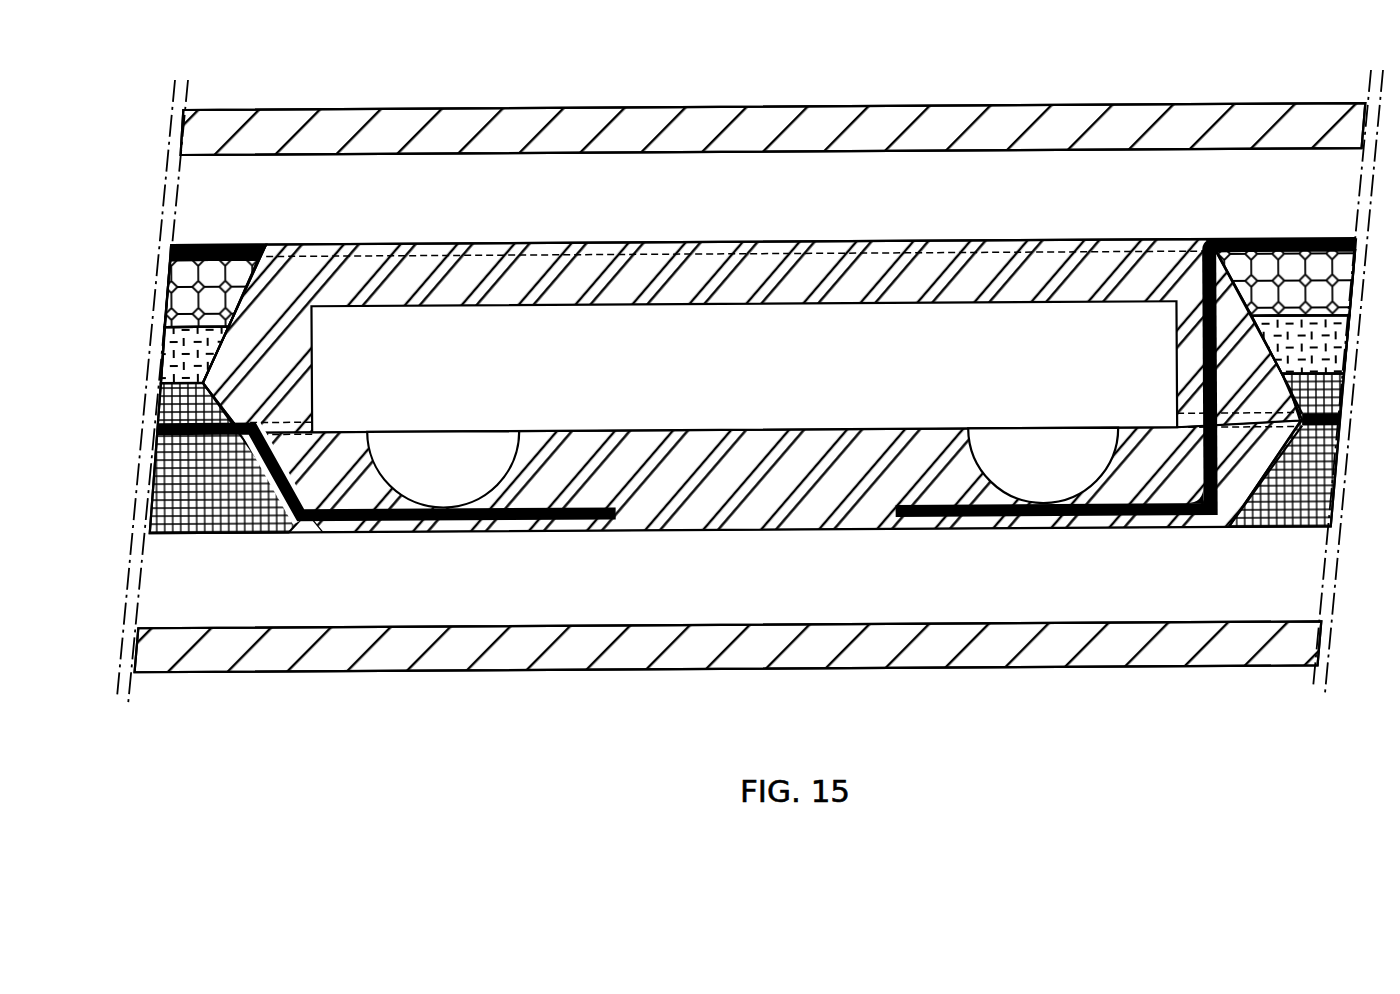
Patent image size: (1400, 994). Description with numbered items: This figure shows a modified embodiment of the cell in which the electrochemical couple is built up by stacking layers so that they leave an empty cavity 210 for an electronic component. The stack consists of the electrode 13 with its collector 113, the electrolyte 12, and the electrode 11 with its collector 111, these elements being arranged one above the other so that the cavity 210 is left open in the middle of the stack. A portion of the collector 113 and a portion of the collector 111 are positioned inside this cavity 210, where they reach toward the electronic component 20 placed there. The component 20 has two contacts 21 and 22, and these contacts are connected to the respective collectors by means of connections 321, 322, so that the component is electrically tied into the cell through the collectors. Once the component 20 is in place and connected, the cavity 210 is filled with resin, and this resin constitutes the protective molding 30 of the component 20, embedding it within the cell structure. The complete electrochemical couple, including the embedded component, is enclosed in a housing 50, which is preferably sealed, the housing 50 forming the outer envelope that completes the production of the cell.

The electrode 11 is at (1282, 267).
The electrolyte 12 is at (1305, 330).
The electrode 13 is at (1292, 503).
The electronic component 20 is at (788, 378).
The contact 21 is at (1040, 430).
The contact 22 is at (423, 433).
The protective molding 30 is at (683, 517).
The housing 50 is at (1104, 113).
The collector 111 is at (1258, 237).
The collector 113 is at (1330, 432).
The cavity 210 is at (1253, 478).
The connection 321 is at (1058, 468).
The connection 322 is at (453, 457).